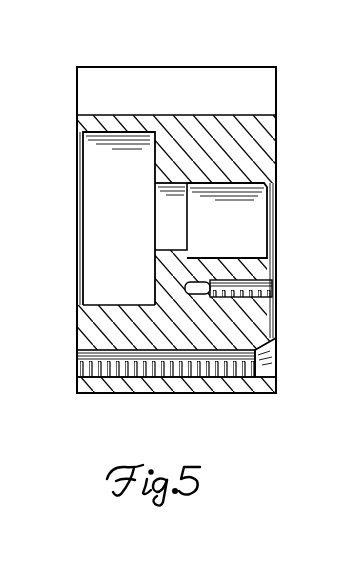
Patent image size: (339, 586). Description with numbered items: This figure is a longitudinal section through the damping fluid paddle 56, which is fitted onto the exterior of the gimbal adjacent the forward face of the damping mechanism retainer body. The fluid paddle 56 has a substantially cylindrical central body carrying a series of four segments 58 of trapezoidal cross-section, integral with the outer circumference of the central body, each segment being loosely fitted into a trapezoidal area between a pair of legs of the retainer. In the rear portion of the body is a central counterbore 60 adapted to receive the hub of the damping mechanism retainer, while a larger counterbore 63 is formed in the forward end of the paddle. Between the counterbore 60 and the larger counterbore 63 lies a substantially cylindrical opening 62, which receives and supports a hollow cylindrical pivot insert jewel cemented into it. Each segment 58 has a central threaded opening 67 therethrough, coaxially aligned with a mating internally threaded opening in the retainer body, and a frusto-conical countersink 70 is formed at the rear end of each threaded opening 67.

The fluid paddle 56 is at (283, 103).
The segment 58 is at (106, 393).
The central counterbore 60 is at (216, 258).
The cylindrical opening 62 is at (160, 250).
The larger counterbore 63 is at (102, 304).
The central threaded opening 67 is at (80, 367).
The frusto-conical countersink 70 is at (262, 383).